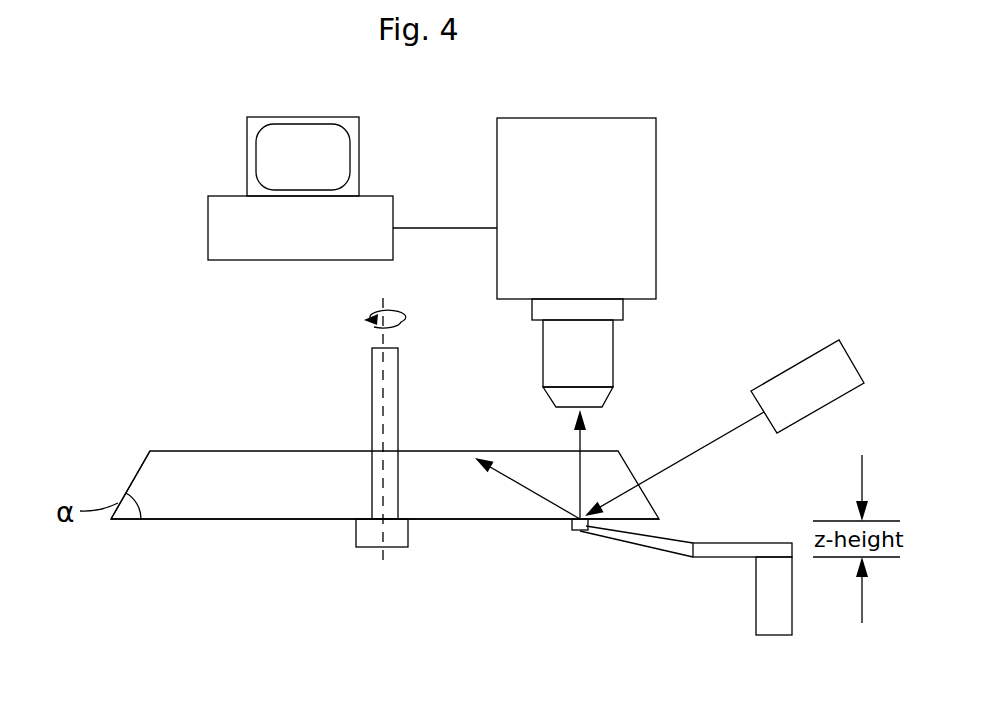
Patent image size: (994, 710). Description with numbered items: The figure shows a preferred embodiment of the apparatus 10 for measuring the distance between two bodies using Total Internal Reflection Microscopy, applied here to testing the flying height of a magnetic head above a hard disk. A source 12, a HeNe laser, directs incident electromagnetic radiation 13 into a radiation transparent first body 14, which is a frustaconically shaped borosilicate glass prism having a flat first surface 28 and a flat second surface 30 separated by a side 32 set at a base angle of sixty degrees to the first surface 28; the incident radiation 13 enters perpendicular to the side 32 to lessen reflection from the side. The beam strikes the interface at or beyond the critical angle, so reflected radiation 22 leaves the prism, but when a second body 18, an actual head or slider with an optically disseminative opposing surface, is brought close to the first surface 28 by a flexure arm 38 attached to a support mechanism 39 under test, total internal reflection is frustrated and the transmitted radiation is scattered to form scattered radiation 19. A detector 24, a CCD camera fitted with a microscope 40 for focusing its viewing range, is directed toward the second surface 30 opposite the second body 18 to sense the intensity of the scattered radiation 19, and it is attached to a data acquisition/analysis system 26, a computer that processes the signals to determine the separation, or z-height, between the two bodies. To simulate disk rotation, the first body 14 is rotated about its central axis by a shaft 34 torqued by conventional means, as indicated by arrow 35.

The apparatus 10 is at (78, 202).
The data acquisition/analysis system 26 is at (359, 157).
The detector 24 is at (656, 255).
The microscope 40 is at (613, 365).
The scattered radiation 19 is at (585, 445).
The reflected radiation 22 is at (510, 477).
The incident electromagnetic radiation 13 is at (683, 460).
The source 12 is at (800, 420).
The second body 18 is at (572, 531).
The flexure arm 38 is at (712, 557).
The support mechanism 39 is at (773, 635).
The second surface 30 is at (265, 432).
The side 32 is at (137, 470).
The first surface 28 is at (168, 548).
The first body 14 is at (266, 552).
The shaft 34 is at (372, 348).
The arrow 35 is at (400, 313).